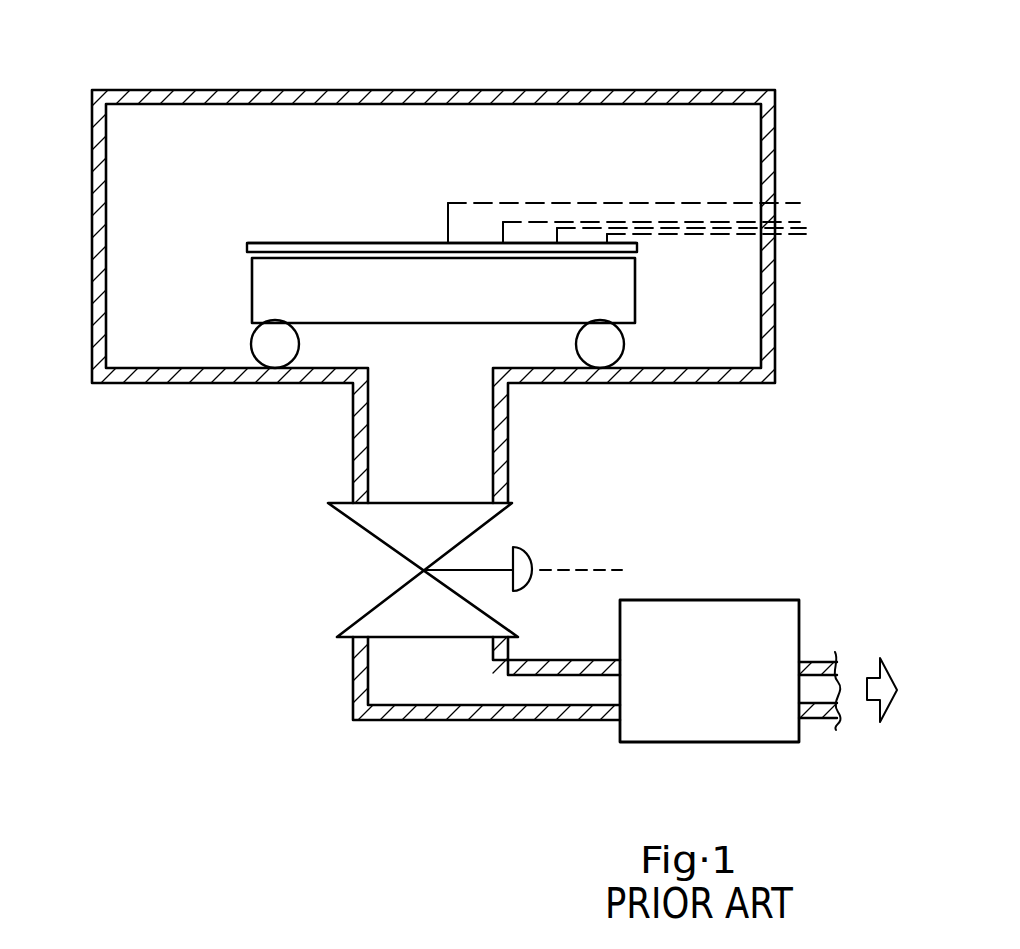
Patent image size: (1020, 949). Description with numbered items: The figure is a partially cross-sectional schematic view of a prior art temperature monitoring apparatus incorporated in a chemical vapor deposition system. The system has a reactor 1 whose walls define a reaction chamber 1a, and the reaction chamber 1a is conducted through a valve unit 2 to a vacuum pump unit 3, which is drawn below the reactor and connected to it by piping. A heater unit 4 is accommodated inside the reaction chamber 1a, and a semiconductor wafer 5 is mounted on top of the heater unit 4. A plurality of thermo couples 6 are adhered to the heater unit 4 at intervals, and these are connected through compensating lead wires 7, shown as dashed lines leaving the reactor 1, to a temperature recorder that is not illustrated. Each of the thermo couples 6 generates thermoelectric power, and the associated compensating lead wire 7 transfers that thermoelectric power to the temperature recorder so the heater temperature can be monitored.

The reactor 1 is at (577, 90).
The reaction chamber 1a is at (323, 160).
The valve unit 2 is at (350, 520).
The vacuum pump unit 3 is at (743, 600).
The heater unit 4 is at (252, 291).
The semiconductor wafer 5 is at (366, 242).
The thermo couples 6 is at (434, 216).
The compensating lead wires 7 is at (719, 178).